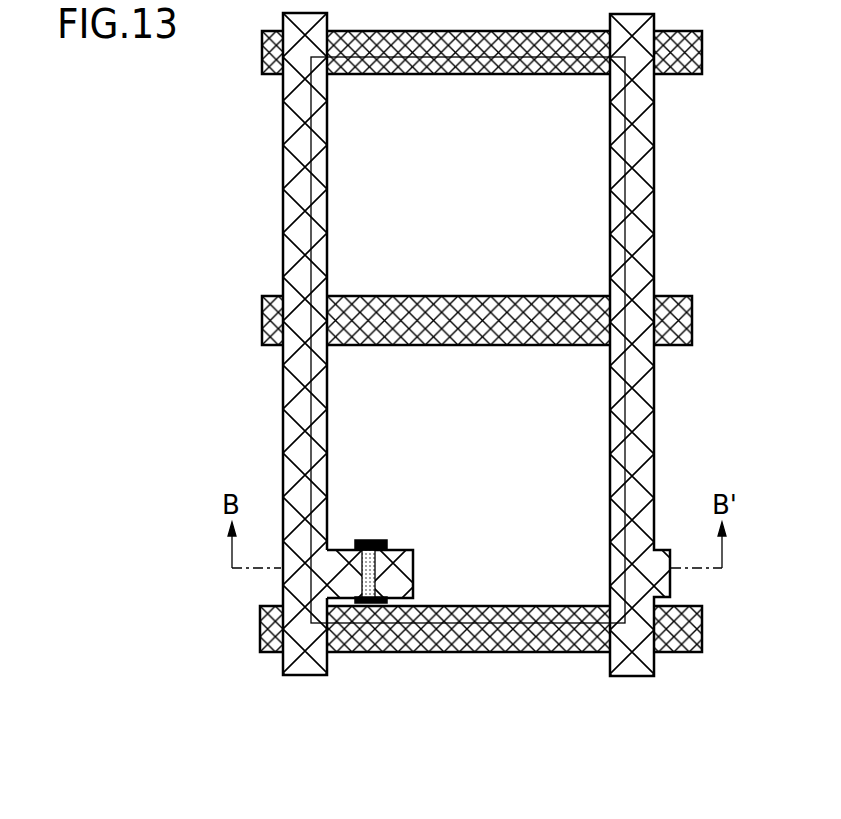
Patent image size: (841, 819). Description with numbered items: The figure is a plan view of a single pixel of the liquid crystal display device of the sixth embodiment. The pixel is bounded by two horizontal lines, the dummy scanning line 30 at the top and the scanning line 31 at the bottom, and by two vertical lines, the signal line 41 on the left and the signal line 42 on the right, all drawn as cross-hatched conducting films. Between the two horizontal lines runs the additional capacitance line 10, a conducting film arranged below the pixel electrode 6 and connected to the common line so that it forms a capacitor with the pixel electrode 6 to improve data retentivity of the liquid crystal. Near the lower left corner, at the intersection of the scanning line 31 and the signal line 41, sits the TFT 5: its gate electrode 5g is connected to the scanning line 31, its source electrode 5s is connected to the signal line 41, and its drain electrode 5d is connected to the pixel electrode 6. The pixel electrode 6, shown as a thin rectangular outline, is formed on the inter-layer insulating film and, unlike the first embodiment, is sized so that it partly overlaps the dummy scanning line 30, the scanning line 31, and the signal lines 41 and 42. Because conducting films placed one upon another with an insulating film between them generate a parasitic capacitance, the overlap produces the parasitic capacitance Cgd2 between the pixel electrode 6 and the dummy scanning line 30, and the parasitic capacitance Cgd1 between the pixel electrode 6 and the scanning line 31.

The dummy scanning line 30 is at (703, 50).
The additional capacitance line 10 is at (692, 312).
The scanning line 31 is at (703, 630).
The signal line 41 is at (328, 14).
The signal line 42 is at (655, 19).
The pixel electrode 6 is at (628, 180).
The source electrode 5s is at (335, 590).
The drain electrode 5d is at (441, 599).
The gate electrode 5g is at (366, 603).
The TFT 5 is at (380, 605).
The parasitic capacitance Cgd1 is at (566, 667).
The parasitic capacitance Cgd2 is at (522, 32).